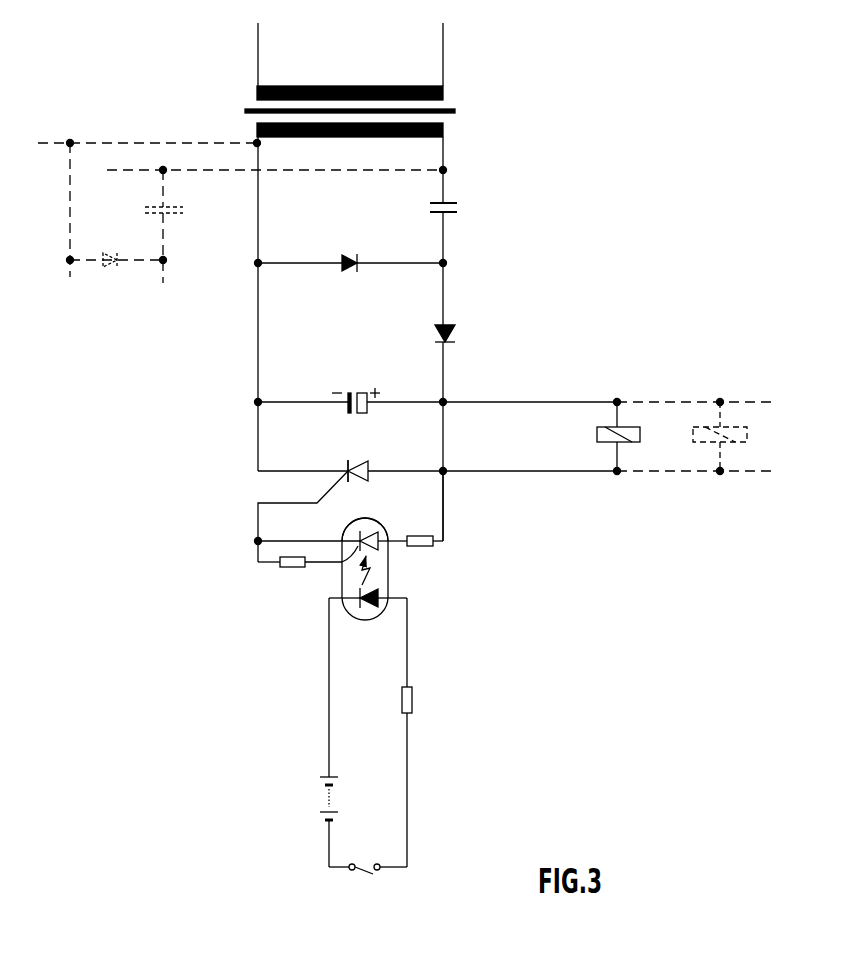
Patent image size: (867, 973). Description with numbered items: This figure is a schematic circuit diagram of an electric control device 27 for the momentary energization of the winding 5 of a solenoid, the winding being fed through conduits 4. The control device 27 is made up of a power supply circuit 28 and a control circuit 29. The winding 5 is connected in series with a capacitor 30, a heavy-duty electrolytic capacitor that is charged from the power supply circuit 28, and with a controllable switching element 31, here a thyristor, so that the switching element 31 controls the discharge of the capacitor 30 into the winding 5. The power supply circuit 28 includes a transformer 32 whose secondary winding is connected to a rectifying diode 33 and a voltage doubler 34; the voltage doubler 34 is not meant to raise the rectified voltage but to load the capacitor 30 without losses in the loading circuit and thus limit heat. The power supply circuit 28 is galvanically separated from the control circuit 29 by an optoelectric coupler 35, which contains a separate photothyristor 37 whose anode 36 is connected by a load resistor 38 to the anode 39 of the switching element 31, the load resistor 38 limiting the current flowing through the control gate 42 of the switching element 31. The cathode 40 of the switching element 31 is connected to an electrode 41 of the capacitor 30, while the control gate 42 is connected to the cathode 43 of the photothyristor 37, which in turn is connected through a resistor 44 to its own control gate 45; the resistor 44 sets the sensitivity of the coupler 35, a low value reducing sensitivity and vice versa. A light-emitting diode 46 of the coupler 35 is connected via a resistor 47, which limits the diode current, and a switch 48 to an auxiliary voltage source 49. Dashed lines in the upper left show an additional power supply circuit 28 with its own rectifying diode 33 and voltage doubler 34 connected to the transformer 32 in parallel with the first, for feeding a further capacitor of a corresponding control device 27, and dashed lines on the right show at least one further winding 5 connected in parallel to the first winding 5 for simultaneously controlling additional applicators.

The conduits 4 is at (587, 402).
The winding 5 is at (597, 431).
The electric control device 27 is at (120, 329).
The power supply circuit 28 is at (117, 141).
The control circuit 29 is at (329, 668).
The capacitor 30 is at (340, 412).
The controllable switching element 31 is at (338, 465).
The transformer 32 is at (463, 121).
The rectifying diode 33 is at (111, 269).
The voltage doubler 34 is at (185, 215).
The optoelectric coupler 35 is at (390, 570).
The anode 36 is at (368, 523).
The photothyristor 37 is at (362, 521).
The load resistor 38 is at (427, 546).
The anode 39 is at (362, 462).
The cathode 40 is at (348, 461).
The electrode 41 is at (352, 398).
The control gate 42 is at (330, 482).
The cathode 43 is at (353, 530).
The resistor 44 is at (295, 568).
The control gate 45 is at (357, 548).
The light-emitting diode 46 is at (370, 608).
The resistor 47 is at (412, 695).
The switch 48 is at (365, 876).
The auxiliary voltage source 49 is at (320, 798).